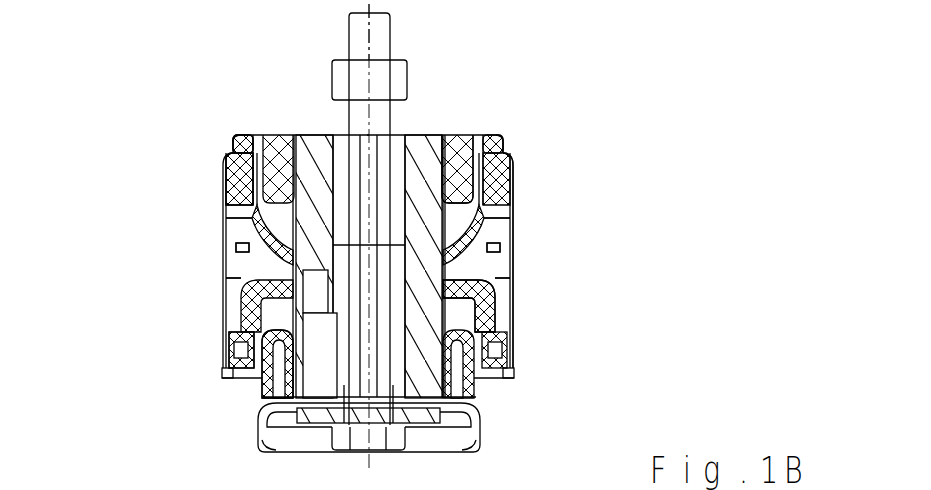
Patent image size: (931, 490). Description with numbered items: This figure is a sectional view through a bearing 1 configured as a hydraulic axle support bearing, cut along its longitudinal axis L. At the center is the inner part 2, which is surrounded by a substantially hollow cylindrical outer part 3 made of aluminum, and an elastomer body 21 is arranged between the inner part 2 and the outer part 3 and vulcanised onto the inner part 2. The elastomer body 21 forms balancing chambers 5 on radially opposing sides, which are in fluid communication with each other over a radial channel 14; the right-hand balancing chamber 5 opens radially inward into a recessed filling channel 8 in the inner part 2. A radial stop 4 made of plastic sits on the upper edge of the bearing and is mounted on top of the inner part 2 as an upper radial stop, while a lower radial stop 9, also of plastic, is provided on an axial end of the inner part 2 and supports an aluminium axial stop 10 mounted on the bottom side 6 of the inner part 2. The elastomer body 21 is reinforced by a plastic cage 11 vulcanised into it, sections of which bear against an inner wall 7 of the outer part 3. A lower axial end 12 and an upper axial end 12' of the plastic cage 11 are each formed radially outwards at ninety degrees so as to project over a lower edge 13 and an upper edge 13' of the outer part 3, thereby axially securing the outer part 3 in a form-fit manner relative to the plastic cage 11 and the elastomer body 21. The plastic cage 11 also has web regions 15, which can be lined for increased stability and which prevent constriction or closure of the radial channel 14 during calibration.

The bearing 1 is at (508, 88).
The inner part 2 is at (433, 135).
The outer part 3 is at (508, 212).
The radial stop 4 is at (500, 138).
The balancing chambers 5 is at (248, 268).
The bottom side 6 is at (478, 420).
The inner wall 7 is at (237, 135).
The filling channel 8 is at (315, 295).
The lower radial stop 9 is at (470, 402).
The axial stop 10 is at (263, 406).
The plastic cage 11 is at (497, 163).
The lower axial end 12 is at (187, 371).
The upper axial end 12' is at (157, 134).
The lower edge 13 is at (168, 354).
The upper edge 13' is at (157, 177).
The radial channel 14 is at (500, 252).
The web regions 15 is at (250, 253).
The elastomer body 21 is at (492, 311).
The longitudinal axis L is at (367, 13).